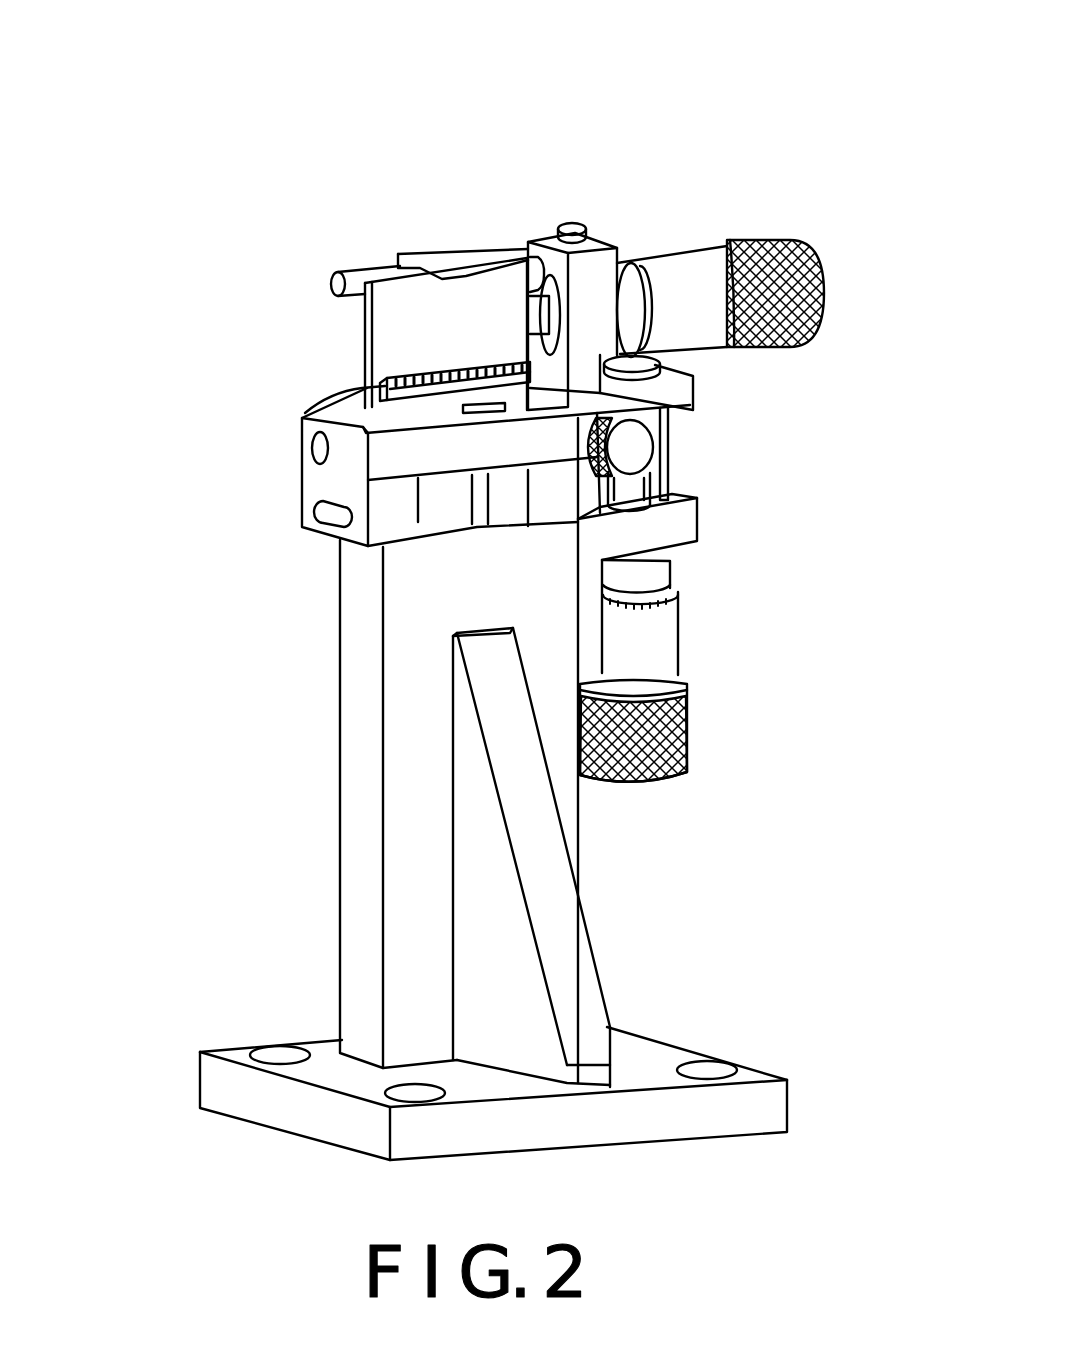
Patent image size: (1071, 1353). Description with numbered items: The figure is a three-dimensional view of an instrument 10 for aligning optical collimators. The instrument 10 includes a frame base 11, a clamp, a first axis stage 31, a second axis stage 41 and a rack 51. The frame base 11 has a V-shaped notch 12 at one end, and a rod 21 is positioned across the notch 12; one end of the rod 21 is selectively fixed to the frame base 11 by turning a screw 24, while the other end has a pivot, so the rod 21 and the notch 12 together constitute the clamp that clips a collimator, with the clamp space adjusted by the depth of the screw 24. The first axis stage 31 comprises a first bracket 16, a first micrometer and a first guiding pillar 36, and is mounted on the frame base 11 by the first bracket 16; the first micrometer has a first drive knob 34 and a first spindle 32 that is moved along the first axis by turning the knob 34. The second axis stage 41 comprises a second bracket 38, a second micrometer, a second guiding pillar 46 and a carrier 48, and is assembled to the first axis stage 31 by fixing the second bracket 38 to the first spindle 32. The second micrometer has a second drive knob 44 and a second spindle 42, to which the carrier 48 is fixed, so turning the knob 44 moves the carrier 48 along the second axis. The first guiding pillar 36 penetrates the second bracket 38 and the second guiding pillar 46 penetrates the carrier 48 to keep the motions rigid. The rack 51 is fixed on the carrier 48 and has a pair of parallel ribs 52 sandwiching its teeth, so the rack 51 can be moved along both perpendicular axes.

The instrument 10 is at (172, 680).
The frame base 11 is at (340, 895).
The V-shaped notch 12 is at (493, 535).
The first bracket 16 is at (700, 523).
The rod 21 is at (445, 483).
The screw 24 is at (670, 437).
The first axis stage 31 is at (695, 583).
The first spindle 32 is at (638, 483).
The first drive knob 34 is at (688, 765).
The first guiding pillar 36 is at (670, 467).
The second bracket 38 is at (700, 390).
The second axis stage 41 is at (690, 160).
The second spindle 42 is at (528, 240).
The second drive knob 44 is at (765, 240).
The second guiding pillar 46 is at (355, 273).
The carrier 48 is at (365, 335).
The rack 51 is at (322, 402).
The ribs 52 is at (442, 373).